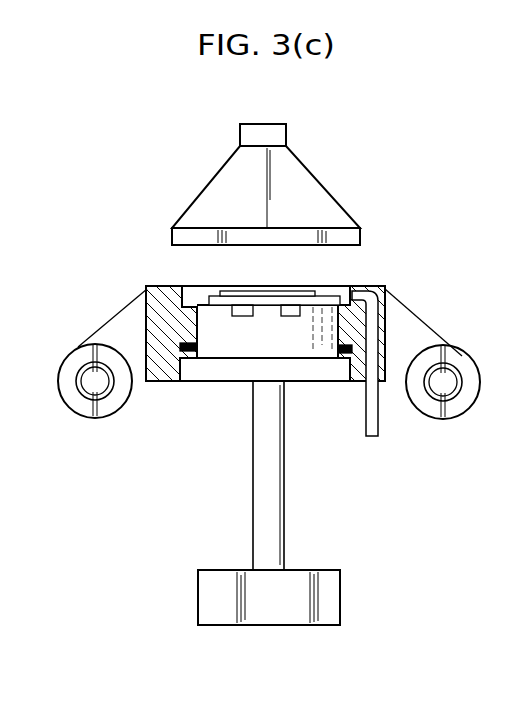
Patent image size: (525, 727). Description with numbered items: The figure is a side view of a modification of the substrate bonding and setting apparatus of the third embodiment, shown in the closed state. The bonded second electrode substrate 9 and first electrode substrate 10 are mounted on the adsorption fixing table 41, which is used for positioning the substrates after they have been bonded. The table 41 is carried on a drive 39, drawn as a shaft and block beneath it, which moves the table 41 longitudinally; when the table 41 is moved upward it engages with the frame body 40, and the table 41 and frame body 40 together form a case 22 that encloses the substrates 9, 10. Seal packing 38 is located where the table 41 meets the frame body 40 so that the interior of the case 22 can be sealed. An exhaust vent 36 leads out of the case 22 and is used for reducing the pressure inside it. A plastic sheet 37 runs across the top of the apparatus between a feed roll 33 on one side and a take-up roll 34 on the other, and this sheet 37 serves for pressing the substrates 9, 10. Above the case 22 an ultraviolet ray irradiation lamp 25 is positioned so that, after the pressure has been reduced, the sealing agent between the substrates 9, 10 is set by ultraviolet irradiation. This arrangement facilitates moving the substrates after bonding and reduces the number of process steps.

The second electrode substrate 9 is at (313, 289).
The first electrode substrate 10 is at (341, 289).
The case 22 is at (170, 286).
The ultraviolet ray irradiation lamp 25 is at (338, 206).
The feed roll 33 is at (80, 372).
The take-up roll 34 is at (458, 376).
The exhaust vent 36 is at (378, 435).
The plastic sheet 37 is at (110, 320).
The seal packing 38 is at (340, 353).
The drive 39 is at (341, 592).
The frame body 40 is at (163, 382).
The adsorption fixing table 41 is at (225, 360).